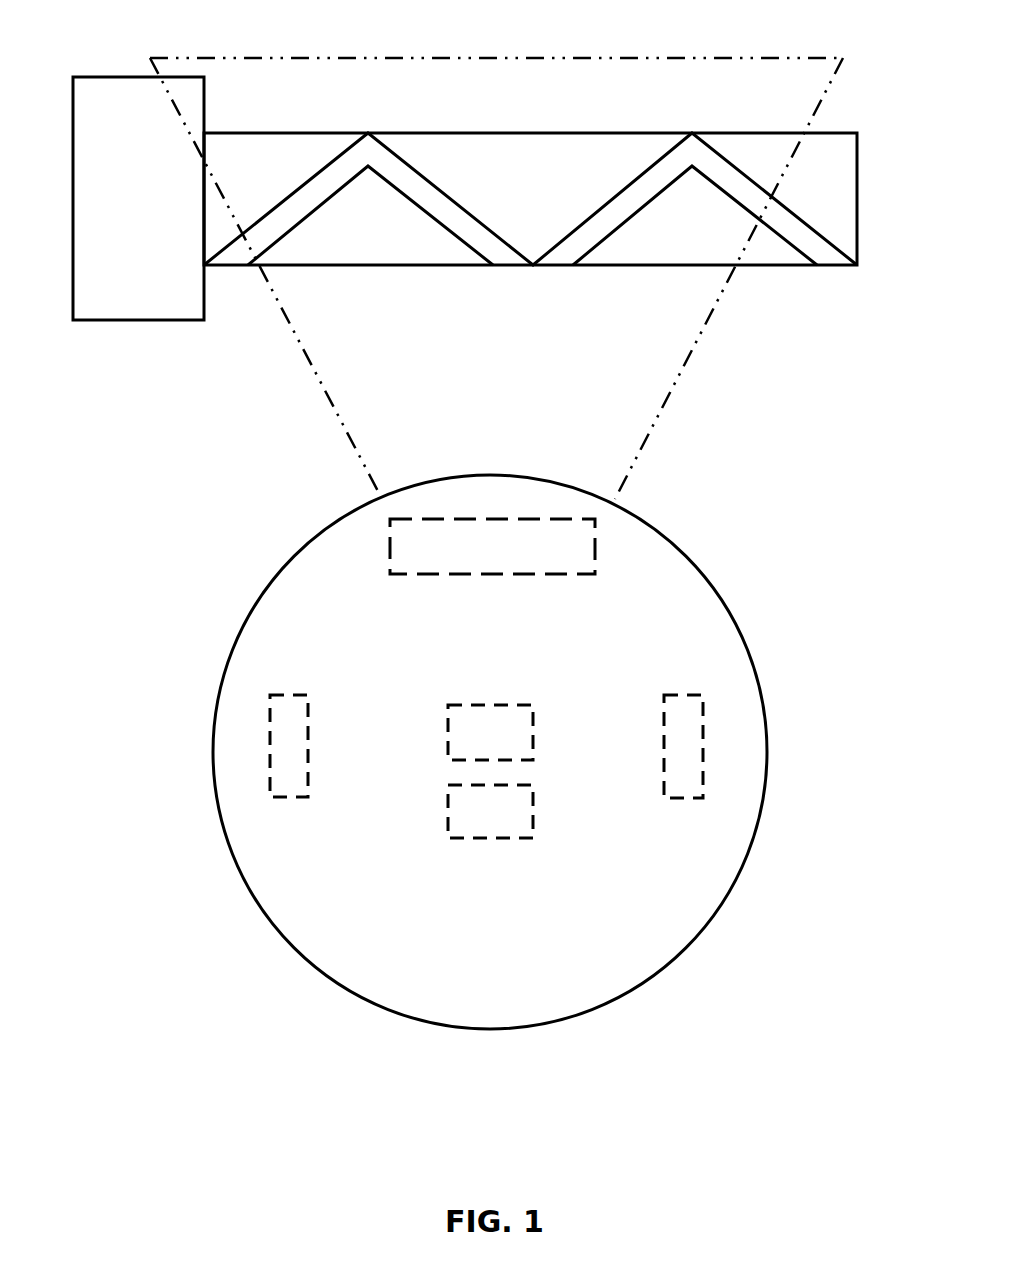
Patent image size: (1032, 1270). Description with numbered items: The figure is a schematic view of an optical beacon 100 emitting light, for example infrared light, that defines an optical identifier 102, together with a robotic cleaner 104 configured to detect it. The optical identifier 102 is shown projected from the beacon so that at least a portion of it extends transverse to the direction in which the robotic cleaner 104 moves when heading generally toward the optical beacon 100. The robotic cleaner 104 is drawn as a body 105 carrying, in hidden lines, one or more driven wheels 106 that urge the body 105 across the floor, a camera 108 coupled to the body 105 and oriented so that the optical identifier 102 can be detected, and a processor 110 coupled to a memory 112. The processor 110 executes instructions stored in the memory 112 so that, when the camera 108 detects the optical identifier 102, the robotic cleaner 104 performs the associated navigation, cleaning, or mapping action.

The optical beacon 100 is at (98, 74).
The optical identifier 102 is at (857, 133).
The robotic cleaner 104 is at (766, 519).
The body 105 is at (268, 585).
The driven wheels 106 is at (270, 705).
The camera 108 is at (390, 535).
The processor 110 is at (448, 705).
The memory 112 is at (448, 835).